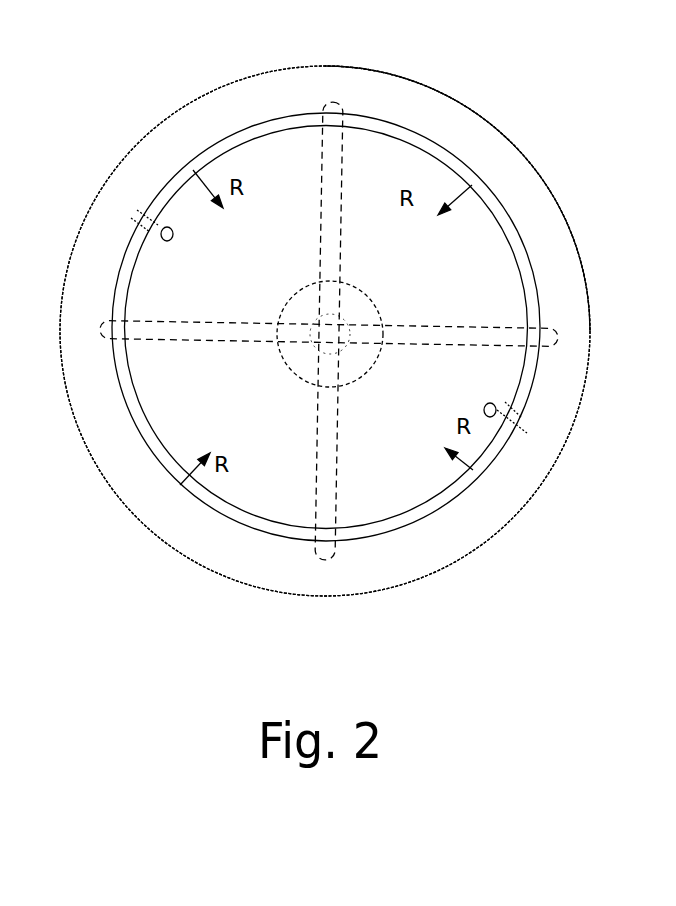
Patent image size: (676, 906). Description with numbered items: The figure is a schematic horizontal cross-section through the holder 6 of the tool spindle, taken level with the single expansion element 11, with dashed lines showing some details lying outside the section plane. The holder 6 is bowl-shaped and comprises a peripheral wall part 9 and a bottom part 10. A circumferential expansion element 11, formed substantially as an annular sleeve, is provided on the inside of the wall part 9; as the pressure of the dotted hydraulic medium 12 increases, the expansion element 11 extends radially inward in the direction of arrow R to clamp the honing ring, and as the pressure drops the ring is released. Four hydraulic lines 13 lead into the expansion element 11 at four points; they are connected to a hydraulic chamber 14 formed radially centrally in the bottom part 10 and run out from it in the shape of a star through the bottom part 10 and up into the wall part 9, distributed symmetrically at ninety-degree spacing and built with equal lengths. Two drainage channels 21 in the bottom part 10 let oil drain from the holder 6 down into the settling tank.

The holder 6 is at (498, 112).
The peripheral wall part 9 is at (555, 233).
The bottom part 10 is at (473, 240).
The expansion element 11 is at (540, 277).
The hydraulic medium 12 is at (318, 352).
The hydraulic lines 13 is at (325, 456).
The hydraulic chamber 14 is at (308, 316).
The drainage channels 21 is at (135, 212).